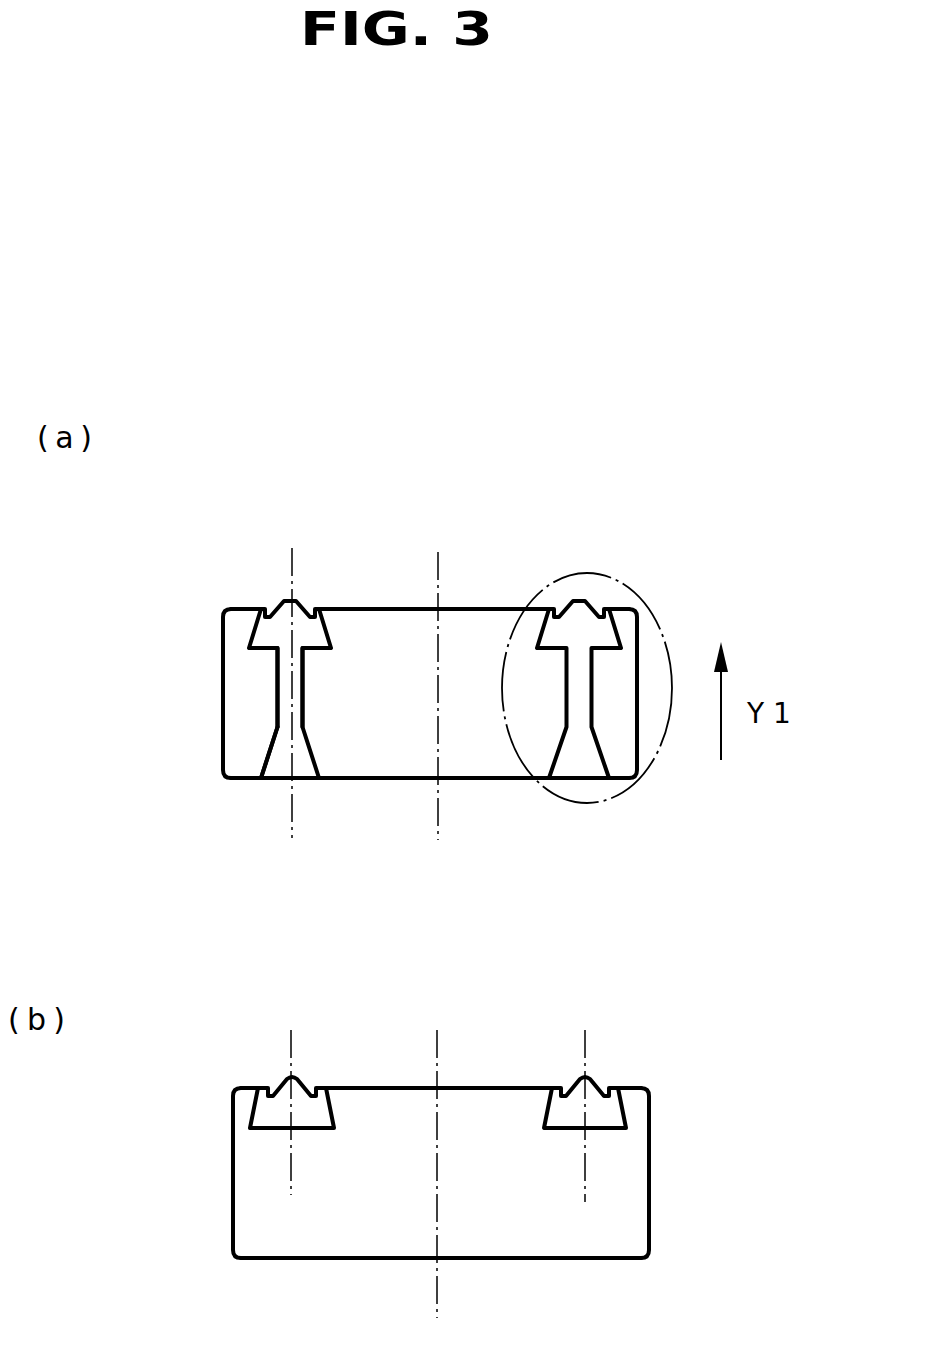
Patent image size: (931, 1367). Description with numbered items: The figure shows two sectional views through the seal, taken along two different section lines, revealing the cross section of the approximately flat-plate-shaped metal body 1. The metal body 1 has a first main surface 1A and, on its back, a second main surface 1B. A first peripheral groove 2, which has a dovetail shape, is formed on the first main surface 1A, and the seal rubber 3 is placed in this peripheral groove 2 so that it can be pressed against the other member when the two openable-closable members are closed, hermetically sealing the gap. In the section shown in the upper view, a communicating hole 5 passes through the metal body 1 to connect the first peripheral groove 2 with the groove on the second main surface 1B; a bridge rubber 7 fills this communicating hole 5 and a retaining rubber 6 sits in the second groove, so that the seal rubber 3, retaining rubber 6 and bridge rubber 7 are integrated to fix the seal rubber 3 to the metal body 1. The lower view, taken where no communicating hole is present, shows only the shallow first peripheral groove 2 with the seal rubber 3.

The metal body 1 is at (612, 1172).
The first main surface 1A is at (392, 609).
The second main surface 1B is at (470, 778).
The first peripheral groove 2 is at (333, 633).
The seal rubber 3 is at (289, 600).
The communicating hole 5 is at (305, 707).
The retaining rubber 6 is at (278, 765).
The bridge rubber 7 is at (283, 690).